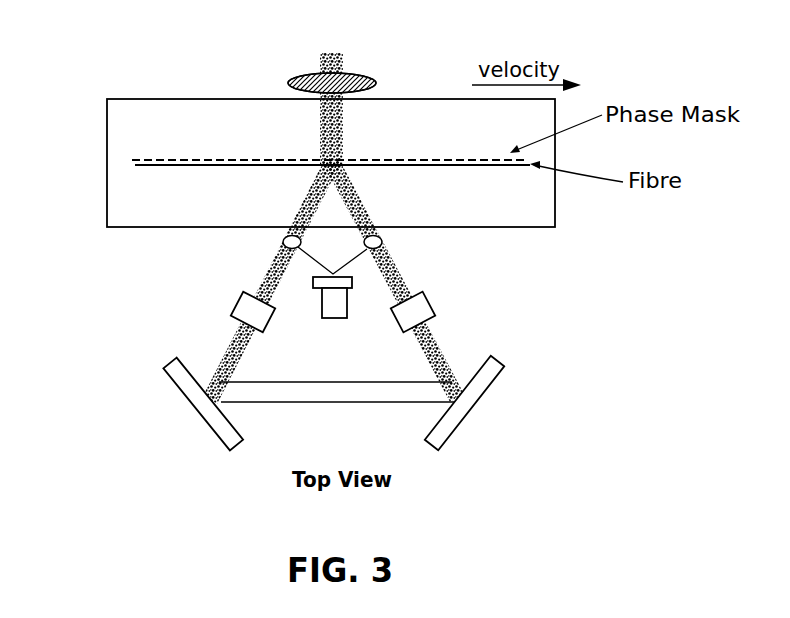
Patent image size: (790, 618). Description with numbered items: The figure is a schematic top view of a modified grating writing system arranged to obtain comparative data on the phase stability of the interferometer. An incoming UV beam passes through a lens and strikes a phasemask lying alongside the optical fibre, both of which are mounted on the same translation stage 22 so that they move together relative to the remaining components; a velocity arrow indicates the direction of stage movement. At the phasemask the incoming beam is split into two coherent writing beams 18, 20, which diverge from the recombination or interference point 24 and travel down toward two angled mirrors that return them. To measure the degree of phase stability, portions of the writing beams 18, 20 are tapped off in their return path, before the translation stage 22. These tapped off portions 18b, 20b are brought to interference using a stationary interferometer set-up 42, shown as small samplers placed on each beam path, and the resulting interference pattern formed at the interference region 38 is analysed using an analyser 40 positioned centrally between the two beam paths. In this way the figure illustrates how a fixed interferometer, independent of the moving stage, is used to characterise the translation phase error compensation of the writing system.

The translation stage 22 is at (107, 128).
The recombination or interference point 24 is at (320, 151).
The writing beam 20 is at (330, 273).
The writing beam 18 is at (336, 273).
The tapped off portion 20b is at (262, 285).
The tapped off portion 18b is at (405, 283).
The stationary interferometer set-up 42 is at (268, 243).
The interference region 38 is at (326, 261).
The analyser 40 is at (335, 320).